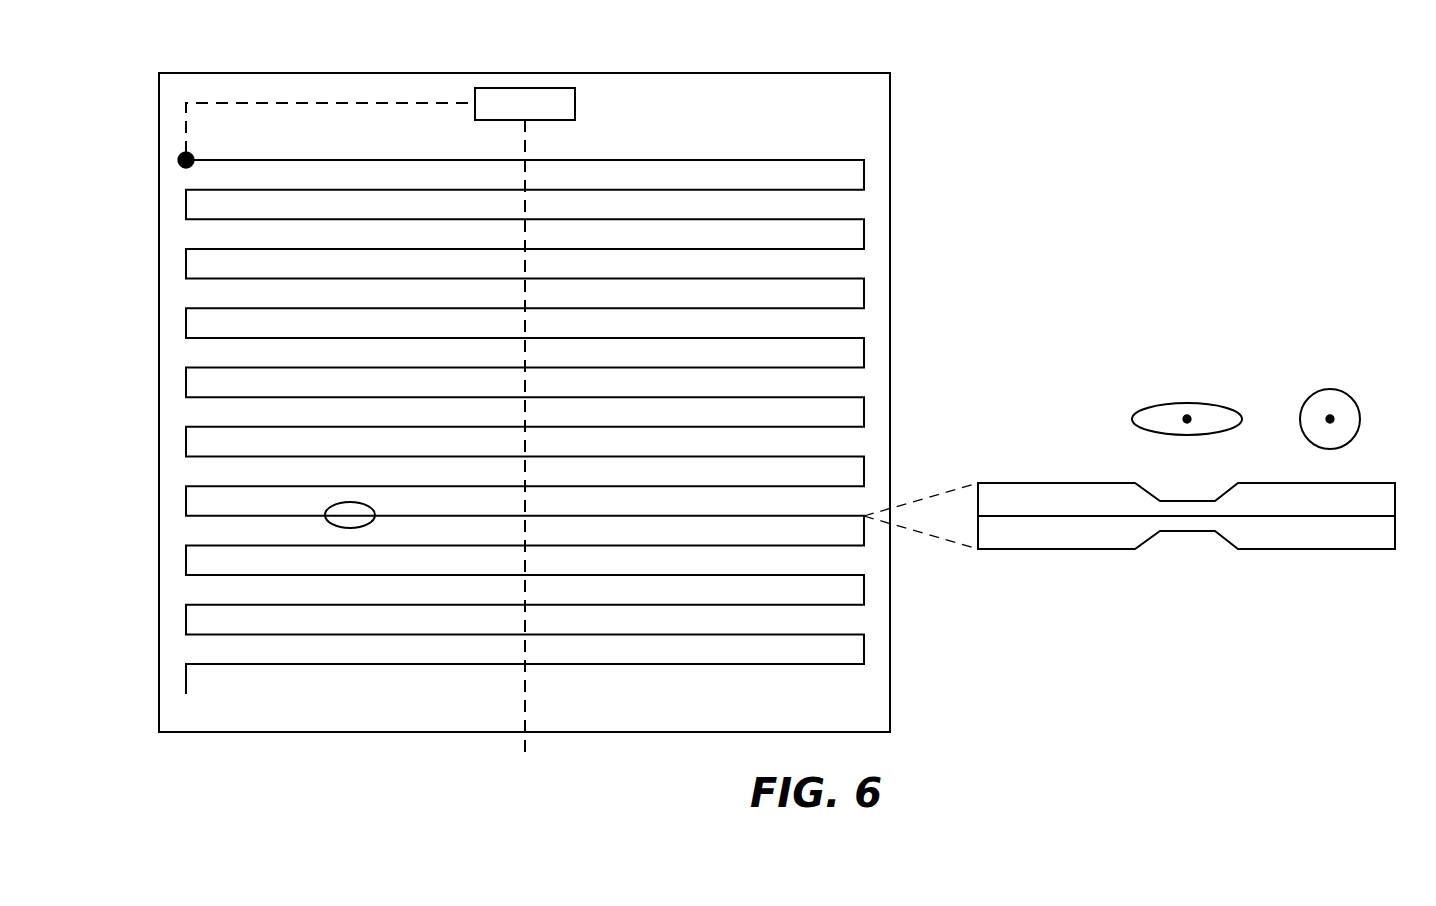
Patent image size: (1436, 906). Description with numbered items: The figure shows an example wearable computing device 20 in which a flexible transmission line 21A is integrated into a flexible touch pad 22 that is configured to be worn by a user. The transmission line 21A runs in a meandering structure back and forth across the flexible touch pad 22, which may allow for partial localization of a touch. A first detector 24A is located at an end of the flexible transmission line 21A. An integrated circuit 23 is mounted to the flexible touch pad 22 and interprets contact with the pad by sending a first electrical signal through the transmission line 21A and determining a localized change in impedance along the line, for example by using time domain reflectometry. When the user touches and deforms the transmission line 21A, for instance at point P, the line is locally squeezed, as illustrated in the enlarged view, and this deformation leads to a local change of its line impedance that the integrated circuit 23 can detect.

The wearable computing device 20 is at (777, 390).
The flexible transmission line 21A is at (835, 190).
The flexible touch pad 22 is at (705, 92).
The integrated circuit 23 is at (577, 103).
The first detector 24A is at (190, 153).
The point P is at (348, 513).